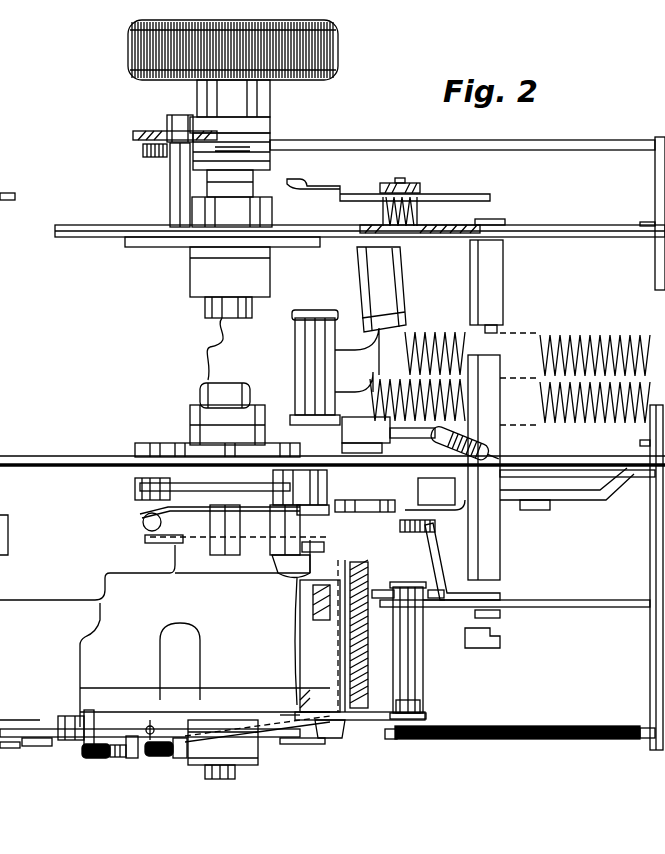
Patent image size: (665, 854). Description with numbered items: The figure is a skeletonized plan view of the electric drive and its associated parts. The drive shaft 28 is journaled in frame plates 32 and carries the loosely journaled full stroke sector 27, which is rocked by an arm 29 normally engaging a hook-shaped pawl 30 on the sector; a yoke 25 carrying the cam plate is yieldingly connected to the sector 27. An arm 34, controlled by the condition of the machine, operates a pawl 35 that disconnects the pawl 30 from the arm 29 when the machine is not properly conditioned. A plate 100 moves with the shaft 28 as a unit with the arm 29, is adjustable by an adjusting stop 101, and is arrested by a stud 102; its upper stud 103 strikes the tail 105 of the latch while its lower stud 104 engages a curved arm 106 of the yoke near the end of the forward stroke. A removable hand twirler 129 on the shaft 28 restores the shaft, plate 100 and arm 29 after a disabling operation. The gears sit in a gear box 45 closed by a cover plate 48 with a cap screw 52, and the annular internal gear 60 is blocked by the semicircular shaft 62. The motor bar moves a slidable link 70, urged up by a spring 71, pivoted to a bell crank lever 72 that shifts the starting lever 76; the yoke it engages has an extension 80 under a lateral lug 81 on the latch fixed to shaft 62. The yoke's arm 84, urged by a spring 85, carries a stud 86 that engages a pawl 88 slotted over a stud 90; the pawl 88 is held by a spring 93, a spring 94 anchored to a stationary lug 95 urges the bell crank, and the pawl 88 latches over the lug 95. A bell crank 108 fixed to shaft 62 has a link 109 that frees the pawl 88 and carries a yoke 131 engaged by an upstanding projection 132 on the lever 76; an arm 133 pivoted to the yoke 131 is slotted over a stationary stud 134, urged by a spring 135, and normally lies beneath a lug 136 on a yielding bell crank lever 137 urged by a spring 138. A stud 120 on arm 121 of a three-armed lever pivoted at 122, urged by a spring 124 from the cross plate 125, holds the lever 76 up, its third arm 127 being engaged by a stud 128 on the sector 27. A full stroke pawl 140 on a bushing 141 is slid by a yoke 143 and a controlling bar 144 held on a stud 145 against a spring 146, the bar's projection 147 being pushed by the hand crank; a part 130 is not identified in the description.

The hand twirler 129 is at (128, 48).
The slidable link 70 is at (170, 130).
The spring 71 is at (165, 160).
The bell crank lever 72 is at (430, 140).
The projection 147 is at (287, 190).
The stud 145 is at (405, 184).
The spring 146 is at (410, 212).
The frame plates 32 is at (566, 243).
The yoke 25 is at (192, 280).
The drive shaft 28 is at (195, 349).
The full stroke sector 27 is at (162, 450).
The controlling bar 144 is at (397, 298).
The cross plate 125 is at (500, 550).
The arm 34 is at (572, 498).
The pawl 35 is at (535, 500).
The starting lever 76 is at (574, 606).
The stud 120 is at (500, 616).
The spring 135 is at (487, 738).
The yoke 131 is at (423, 660).
The cylinder end 130 is at (413, 690).
The upstanding projection 132 is at (431, 604).
The semicircular shaft 62 is at (320, 652).
The annular internal gear 60 is at (313, 600).
The extension 80 is at (382, 584).
The lateral lug 81 is at (403, 572).
The arm 121 is at (442, 570).
The pivot 122 is at (440, 528).
The spring 124 is at (450, 516).
The yoke 143 is at (437, 491).
The bushing 141 is at (384, 453).
The full stroke pawl 140 is at (450, 433).
The arm 29 is at (150, 497).
The stud 102 is at (285, 483).
The adjusting stop 101 is at (140, 512).
The plate 100 is at (137, 525).
The curved arm 106 is at (166, 545).
The upper stud 103 is at (215, 542).
The lower stud 104 is at (275, 542).
The tail 105 is at (296, 562).
The hook-shaped pawl 30 is at (313, 518).
The stud 128 is at (314, 538).
The third arm 127 is at (365, 504).
The gear box 45 is at (108, 582).
The cover plate 48 is at (111, 690).
The stud 86 is at (58, 722).
The lug 136 is at (84, 712).
The yielding bell crank lever 137 is at (38, 740).
The spring 138 is at (30, 748).
The stationary lug 95 is at (84, 758).
The spring 94 is at (115, 758).
The stud 90 is at (133, 758).
The pawl 88 is at (140, 740).
The spring 85 is at (178, 758).
The stationary stud 134 is at (190, 748).
The cap screw 52 is at (225, 779).
The spring 93 is at (150, 720).
The arm 133 is at (218, 712).
The arm 84 is at (285, 718).
The link 109 is at (296, 745).
The bell crank 108 is at (345, 745).